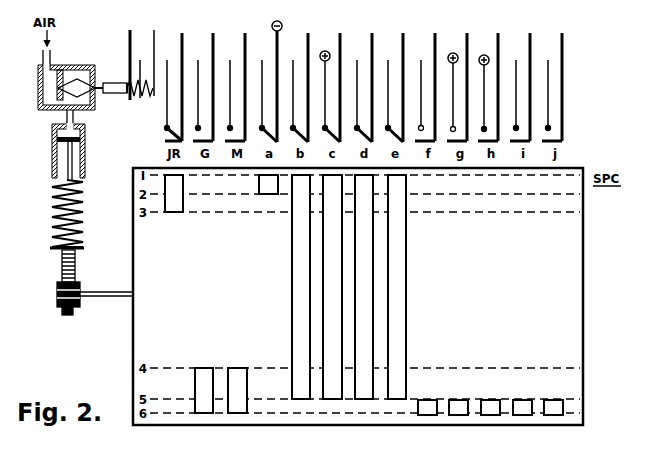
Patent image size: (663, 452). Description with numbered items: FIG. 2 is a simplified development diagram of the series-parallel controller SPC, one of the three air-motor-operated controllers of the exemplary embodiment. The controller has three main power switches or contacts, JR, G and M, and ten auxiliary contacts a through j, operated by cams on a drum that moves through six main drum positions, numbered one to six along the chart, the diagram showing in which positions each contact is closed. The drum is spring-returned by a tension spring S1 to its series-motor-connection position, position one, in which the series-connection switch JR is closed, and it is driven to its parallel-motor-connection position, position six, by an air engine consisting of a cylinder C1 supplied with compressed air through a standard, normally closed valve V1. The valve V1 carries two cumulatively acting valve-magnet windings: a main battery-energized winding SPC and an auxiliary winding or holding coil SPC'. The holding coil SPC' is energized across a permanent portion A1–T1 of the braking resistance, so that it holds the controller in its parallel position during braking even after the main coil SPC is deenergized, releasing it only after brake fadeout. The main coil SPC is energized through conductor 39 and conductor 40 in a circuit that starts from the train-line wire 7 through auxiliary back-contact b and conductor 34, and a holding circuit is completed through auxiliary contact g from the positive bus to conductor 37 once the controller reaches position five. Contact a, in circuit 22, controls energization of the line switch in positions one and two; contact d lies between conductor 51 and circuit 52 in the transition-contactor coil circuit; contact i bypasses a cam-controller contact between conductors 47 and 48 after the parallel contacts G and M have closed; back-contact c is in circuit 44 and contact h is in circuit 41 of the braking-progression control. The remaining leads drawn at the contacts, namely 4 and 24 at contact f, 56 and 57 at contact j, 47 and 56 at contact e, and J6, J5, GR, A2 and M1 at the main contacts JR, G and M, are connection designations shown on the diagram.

The terminal lead 4 is at (421, 89).
The train-line wire 7 is at (298, 94).
The circuit 22 is at (267, 94).
The terminal lead 24 is at (429, 79).
The conductor 34 is at (309, 79).
The conductor 37 is at (461, 79).
The conductor 39 is at (121, 88).
The conductor 40 is at (153, 56).
The circuit 41 is at (492, 79).
The circuit 44 is at (341, 79).
The conductor 47 is at (453, 94).
The conductor 48 is at (524, 79).
The conductor 51 is at (361, 94).
The circuit 52 is at (372, 79).
The terminal lead 56 is at (476, 79).
The terminal lead 57 is at (556, 79).
The standard valve V1 is at (62, 67).
The cylinder C1 is at (86, 148).
The tension spring S1 is at (83, 208).
The braking-resistance circuit point A1 is at (130, 58).
The braking-resistance circuit point T1 is at (141, 72).
The lead A2 is at (231, 89).
The lead J5 is at (185, 79).
The lead J6 is at (171, 93).
The lead GR is at (208, 79).
The lead M1 is at (238, 79).
The series-parallel controller SPC is at (115, 101).
The holding coil SPC' is at (143, 104).